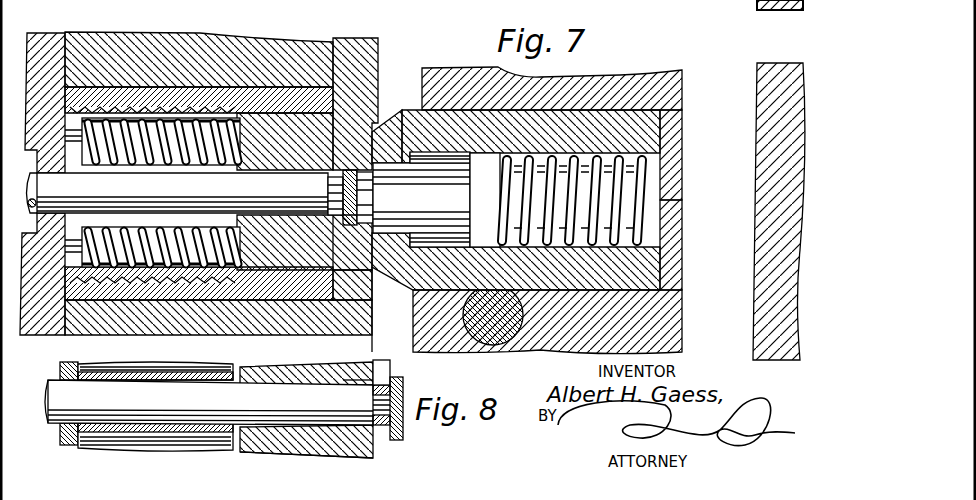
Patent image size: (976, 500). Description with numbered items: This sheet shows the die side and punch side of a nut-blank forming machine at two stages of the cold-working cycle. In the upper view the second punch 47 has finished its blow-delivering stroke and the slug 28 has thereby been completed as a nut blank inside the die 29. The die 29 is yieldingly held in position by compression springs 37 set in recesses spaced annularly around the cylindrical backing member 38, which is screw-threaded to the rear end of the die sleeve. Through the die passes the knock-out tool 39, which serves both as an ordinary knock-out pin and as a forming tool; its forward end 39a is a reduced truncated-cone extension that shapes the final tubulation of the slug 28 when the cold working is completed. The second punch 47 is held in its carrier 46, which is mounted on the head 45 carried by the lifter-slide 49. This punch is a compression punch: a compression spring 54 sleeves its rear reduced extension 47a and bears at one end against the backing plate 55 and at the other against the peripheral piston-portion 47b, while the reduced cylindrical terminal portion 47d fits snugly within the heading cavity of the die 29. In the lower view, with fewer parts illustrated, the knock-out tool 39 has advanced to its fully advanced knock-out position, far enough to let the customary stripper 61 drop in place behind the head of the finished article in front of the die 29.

In FIG. 7, the compression springs 37 is at (143, 107).
In FIG. 7, the cylindrical backing member 38 is at (187, 113).
In FIG. 7, the slug 28 is at (333, 112).
In FIG. 8, the slug 28 is at (398, 387).
In FIG. 7, the knock-out tool 39 is at (178, 193).
In FIG. 8, the knock-out tool 39 is at (255, 398).
In FIG. 7, the forward end of knock-out tool 39a is at (328, 185).
In FIG. 7, the second punch 47 is at (436, 158).
In FIG. 7, the reduced cylindrical terminal portion 47d is at (402, 197).
In FIG. 7, the piston-portion 47b is at (478, 182).
In FIG. 7, the rear reduced extension 47a is at (657, 193).
In FIG. 7, the carrier for second punch 46 is at (449, 115).
In FIG. 7, the head 45 is at (607, 88).
In FIG. 7, the lifter-slide 49 is at (707, 80).
In FIG. 7, the compression spring 54 is at (645, 190).
In FIG. 7, the backing plate 55 is at (668, 227).
In FIG. 8, the stripper 61 is at (382, 369).
In FIG. 8, the die 29 is at (372, 447).